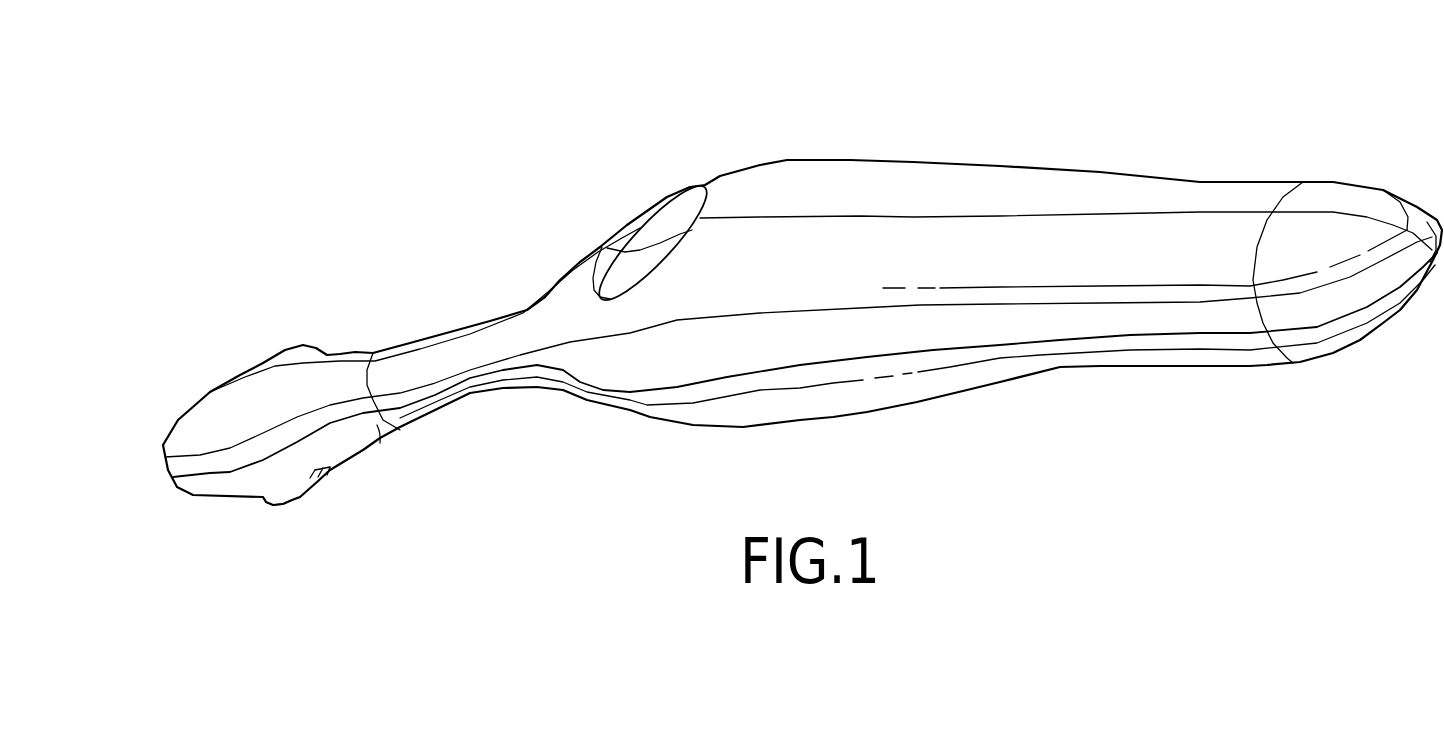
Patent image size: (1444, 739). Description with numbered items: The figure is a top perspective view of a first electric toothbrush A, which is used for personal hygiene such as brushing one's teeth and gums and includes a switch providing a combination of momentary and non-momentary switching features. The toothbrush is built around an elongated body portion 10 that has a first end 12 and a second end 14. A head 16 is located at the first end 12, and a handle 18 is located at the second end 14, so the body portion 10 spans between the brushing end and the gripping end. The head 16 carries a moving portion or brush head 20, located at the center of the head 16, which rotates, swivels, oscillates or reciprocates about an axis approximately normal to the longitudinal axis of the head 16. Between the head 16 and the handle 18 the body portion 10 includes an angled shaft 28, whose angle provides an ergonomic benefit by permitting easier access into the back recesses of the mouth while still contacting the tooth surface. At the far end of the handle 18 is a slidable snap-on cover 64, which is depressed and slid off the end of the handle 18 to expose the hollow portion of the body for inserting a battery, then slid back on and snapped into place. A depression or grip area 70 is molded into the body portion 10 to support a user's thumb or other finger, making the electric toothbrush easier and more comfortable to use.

The first electric toothbrush A is at (857, 152).
The body portion 10 is at (837, 372).
The first end 12 is at (345, 350).
The second end 14 is at (1212, 353).
The head 16 is at (268, 388).
The handle 18 is at (1048, 317).
The moving portion 20 is at (283, 500).
The angled shaft 28 is at (453, 388).
The slidable snap-on cover 64 is at (1343, 330).
The depression or grip area 70 is at (678, 205).